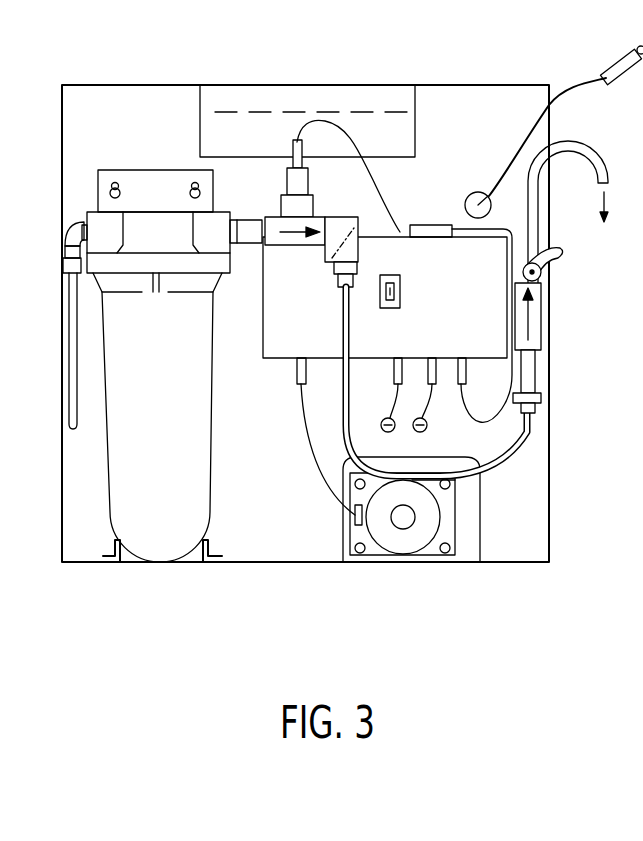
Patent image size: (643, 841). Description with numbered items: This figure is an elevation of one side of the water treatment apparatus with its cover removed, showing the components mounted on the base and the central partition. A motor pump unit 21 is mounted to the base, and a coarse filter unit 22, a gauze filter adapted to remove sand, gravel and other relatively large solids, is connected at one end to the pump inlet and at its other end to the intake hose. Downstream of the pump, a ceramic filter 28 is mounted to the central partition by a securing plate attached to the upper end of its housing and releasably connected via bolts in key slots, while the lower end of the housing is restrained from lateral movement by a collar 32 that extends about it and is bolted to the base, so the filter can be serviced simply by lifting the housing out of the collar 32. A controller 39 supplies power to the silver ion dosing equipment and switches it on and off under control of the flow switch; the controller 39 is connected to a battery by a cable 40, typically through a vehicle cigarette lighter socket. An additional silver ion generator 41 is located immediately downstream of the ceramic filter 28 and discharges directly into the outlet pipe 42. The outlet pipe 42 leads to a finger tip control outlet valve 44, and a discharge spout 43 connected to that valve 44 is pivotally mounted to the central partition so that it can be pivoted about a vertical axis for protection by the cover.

The motor pump unit 21 is at (403, 522).
The coarse filter unit 22 is at (352, 323).
The ceramic filter 28 is at (157, 540).
The collar 32 is at (222, 553).
The controller 39 is at (483, 294).
The cable 40 is at (528, 117).
The additional silver ion generator 41 is at (320, 217).
The outlet pipe 42 is at (342, 399).
The discharge spout 43 is at (401, 292).
The finger tip control outlet valve 44 is at (532, 337).